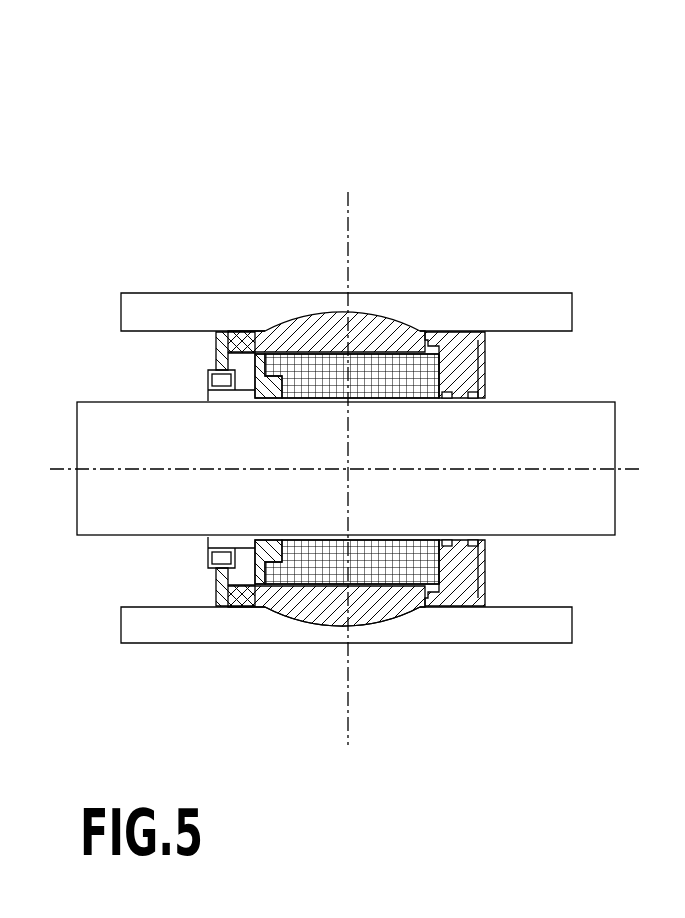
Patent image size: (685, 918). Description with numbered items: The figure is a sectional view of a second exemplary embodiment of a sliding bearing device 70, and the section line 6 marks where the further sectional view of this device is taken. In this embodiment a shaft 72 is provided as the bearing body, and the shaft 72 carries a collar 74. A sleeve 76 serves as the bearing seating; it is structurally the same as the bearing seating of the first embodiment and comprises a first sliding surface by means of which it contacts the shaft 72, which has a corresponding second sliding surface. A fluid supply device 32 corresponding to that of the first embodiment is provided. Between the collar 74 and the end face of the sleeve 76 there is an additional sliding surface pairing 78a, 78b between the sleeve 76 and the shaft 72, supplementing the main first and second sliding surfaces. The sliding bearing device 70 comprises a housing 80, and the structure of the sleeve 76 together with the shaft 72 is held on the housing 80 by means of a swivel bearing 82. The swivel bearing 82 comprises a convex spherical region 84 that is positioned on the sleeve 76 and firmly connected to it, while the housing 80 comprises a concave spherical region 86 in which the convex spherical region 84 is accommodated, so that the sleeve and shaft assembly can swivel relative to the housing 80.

The section line 6- 6 is at (352, 211).
The fluid supply device 32 is at (465, 345).
The sliding bearing device 70 is at (302, 389).
The shaft 72 is at (587, 515).
The collar 74 is at (247, 385).
The sleeve 76 is at (296, 378).
The sliding surface pairing 78a is at (270, 605).
The sliding surface pairing 78b is at (266, 540).
The housing 80 is at (507, 627).
The swivel bearing 82 is at (335, 312).
The convex spherical region 84 is at (400, 618).
The concave spherical region 86 is at (330, 625).